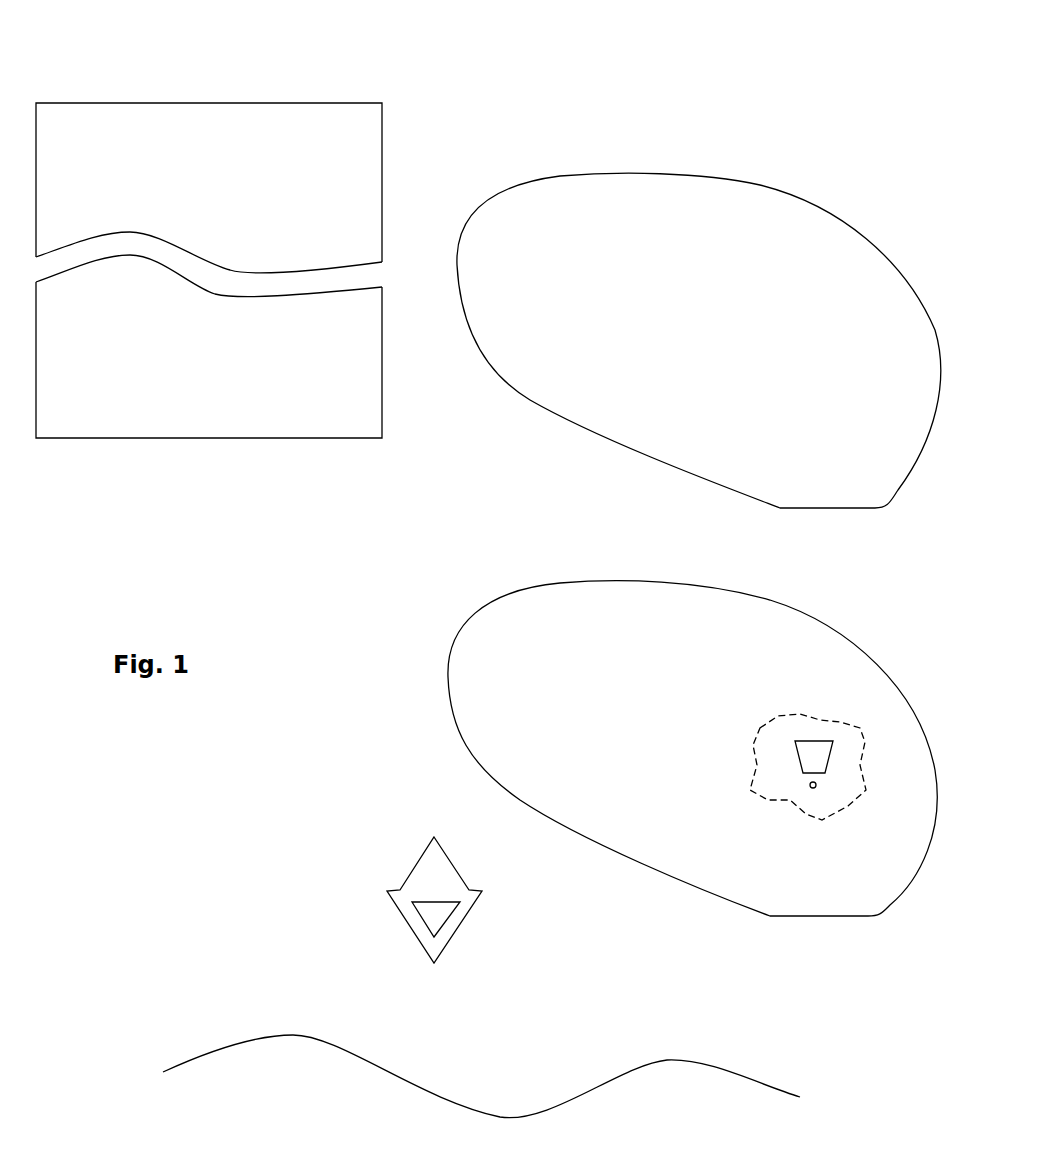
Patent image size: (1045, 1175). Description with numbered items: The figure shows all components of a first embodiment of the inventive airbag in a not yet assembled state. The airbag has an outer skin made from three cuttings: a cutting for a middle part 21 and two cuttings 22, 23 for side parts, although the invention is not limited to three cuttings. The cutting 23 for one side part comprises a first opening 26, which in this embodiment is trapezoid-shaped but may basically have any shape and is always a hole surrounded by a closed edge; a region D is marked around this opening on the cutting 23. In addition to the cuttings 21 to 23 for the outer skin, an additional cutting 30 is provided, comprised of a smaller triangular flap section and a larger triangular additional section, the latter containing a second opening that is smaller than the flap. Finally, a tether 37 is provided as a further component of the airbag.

The middle part cutting 21 is at (172, 143).
The side part cutting 22 is at (732, 263).
The side part cutting 23 is at (545, 643).
The first opening 26 is at (817, 752).
The designated region D is at (777, 802).
The additional cutting 30 is at (422, 874).
The tether 37 is at (243, 1040).